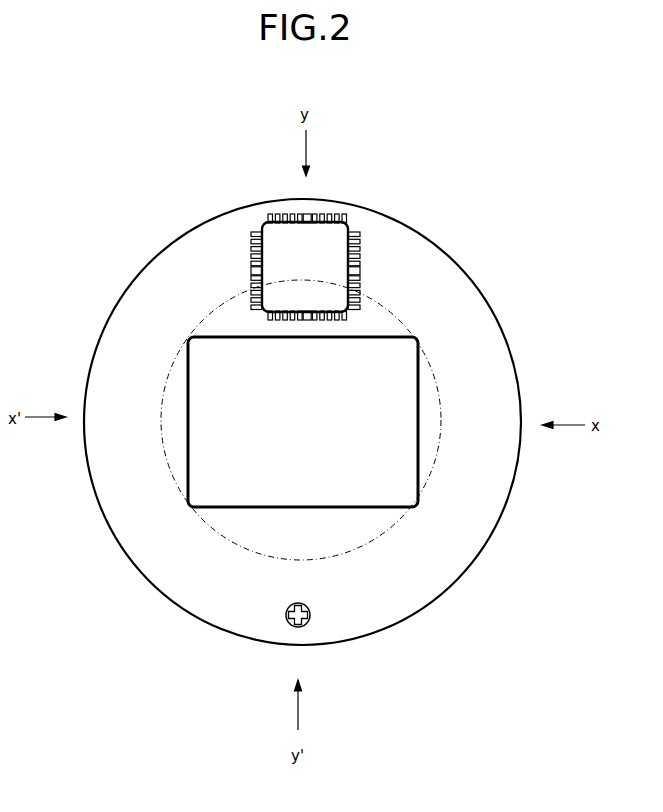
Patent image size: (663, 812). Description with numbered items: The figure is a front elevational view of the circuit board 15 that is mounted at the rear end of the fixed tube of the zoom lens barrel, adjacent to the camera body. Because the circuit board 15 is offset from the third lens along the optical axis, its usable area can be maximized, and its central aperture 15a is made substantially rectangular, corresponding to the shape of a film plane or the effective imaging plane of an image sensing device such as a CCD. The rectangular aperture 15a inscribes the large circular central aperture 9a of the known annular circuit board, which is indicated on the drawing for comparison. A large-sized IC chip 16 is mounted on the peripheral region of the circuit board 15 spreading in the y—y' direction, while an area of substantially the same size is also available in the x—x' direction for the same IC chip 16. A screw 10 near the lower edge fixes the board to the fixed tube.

The central aperture 9a is at (386, 533).
The screw 10 is at (309, 622).
The circuit board 15 is at (437, 255).
The central aperture 15a is at (413, 338).
The IC chip 16 is at (340, 230).